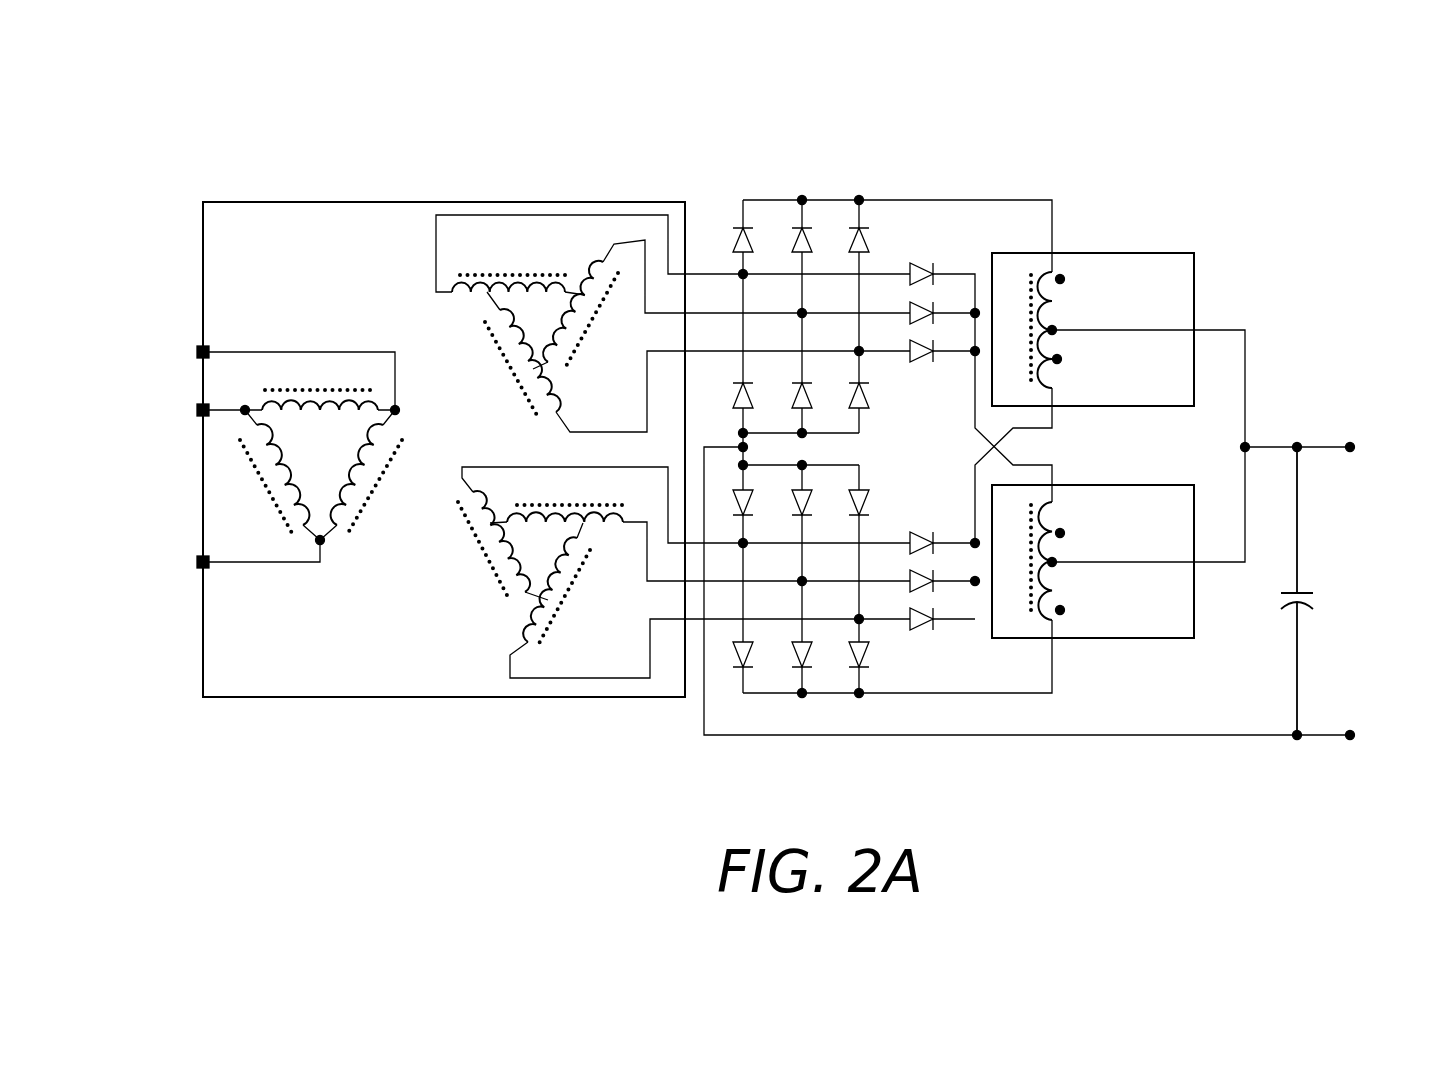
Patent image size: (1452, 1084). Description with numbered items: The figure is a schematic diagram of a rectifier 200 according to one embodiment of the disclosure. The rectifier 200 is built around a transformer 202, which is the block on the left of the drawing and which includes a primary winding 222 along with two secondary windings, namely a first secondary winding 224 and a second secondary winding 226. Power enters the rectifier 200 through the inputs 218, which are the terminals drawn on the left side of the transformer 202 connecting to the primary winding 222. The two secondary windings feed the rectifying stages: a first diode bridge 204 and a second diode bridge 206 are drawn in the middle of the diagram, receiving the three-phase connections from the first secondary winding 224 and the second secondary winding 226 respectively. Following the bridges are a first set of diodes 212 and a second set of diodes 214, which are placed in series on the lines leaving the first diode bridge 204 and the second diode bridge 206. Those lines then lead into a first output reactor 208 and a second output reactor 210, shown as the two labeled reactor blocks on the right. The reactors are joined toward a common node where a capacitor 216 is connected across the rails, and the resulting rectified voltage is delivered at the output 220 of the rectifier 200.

The rectifier 200 is at (270, 165).
The transformer 202 is at (445, 200).
The first diode bridge 204 is at (775, 183).
The second diode bridge 206 is at (775, 740).
The first output reactor 208 is at (1120, 253).
The second output reactor 210 is at (1110, 640).
The first set of diodes 212 is at (925, 265).
The second set of diodes 214 is at (935, 645).
The capacitor 216 is at (1308, 592).
The inputs 218 is at (200, 350).
The output 220 is at (1355, 443).
The primary winding 222 is at (340, 555).
The first secondary winding 224 is at (508, 392).
The second secondary winding 226 is at (495, 605).